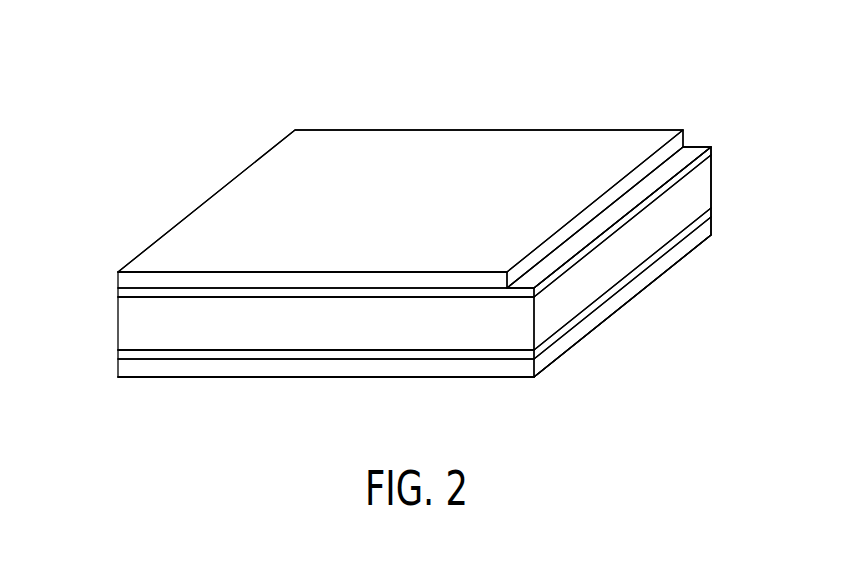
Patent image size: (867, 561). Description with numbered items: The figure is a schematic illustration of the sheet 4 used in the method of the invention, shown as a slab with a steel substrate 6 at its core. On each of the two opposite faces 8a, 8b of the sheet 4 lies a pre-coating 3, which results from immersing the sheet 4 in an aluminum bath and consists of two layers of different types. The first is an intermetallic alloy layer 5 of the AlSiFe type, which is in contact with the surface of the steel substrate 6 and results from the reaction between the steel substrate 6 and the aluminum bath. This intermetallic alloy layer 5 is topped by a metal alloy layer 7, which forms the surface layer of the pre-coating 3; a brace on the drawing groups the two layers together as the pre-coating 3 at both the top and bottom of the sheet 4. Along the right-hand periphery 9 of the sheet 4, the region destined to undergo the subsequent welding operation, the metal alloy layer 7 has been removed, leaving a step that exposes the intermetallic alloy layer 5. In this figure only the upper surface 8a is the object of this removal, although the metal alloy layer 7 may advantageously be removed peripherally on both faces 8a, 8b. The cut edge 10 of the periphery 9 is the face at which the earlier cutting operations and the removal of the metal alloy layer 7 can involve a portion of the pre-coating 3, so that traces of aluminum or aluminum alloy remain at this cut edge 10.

The sheet 4 is at (233, 163).
The upper surface 8a is at (393, 152).
The opposite face 8b is at (221, 377).
The metal alloy layer 7 is at (128, 281).
The intermetallic alloy layer 5 is at (128, 293).
The steel substrate 6 is at (128, 326).
The pre-coating 3 is at (22, 255).
The periphery 9 is at (722, 135).
The cut edge 10 is at (693, 195).